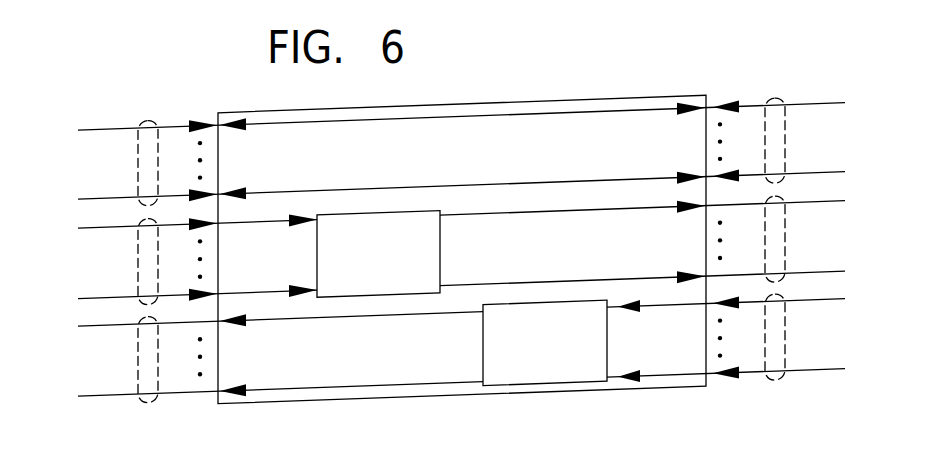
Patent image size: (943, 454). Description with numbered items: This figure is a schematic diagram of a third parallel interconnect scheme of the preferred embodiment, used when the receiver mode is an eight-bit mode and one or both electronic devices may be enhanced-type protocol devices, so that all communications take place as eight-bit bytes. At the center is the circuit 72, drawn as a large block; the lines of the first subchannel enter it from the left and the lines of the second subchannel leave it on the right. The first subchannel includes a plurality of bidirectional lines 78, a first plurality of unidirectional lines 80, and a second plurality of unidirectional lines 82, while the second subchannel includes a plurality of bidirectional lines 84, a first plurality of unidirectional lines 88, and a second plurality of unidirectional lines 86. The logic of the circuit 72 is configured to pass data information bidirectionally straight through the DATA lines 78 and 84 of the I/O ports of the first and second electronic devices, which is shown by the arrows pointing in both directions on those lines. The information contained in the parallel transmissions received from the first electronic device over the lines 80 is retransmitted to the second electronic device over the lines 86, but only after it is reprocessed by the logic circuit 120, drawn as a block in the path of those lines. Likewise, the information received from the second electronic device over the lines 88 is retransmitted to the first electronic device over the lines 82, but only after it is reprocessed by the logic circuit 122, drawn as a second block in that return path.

The circuit 72 is at (624, 97).
The bidirectional lines 78 is at (137, 173).
The first plurality of unidirectional lines 80 is at (137, 272).
The second plurality of unidirectional lines 82 is at (137, 349).
The bidirectional lines 84 is at (787, 150).
The second plurality of unidirectional lines 86 is at (787, 248).
The first plurality of unidirectional lines 88 is at (787, 323).
The logic circuit 120 is at (415, 280).
The logic circuit 122 is at (582, 369).